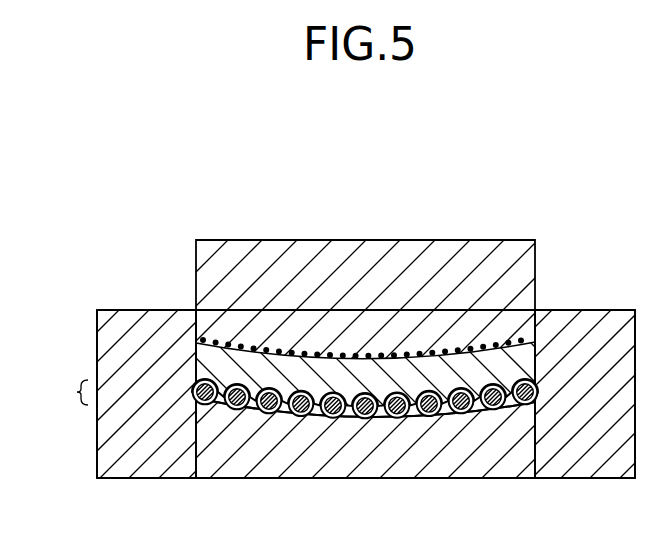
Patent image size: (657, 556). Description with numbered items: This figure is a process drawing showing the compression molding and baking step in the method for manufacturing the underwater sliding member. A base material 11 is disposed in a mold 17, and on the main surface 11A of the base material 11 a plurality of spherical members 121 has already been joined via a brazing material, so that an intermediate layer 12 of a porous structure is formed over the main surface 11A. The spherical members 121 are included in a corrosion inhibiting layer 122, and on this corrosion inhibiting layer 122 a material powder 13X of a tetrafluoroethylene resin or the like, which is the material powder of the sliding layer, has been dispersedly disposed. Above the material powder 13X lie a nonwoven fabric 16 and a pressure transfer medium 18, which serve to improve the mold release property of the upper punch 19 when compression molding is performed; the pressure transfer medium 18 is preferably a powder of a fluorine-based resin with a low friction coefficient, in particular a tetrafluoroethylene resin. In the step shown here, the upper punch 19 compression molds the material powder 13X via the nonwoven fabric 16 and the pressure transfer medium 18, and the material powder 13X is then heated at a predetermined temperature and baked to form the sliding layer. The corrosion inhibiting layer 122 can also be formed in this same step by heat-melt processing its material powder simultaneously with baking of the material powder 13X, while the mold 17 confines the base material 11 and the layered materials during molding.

The base material 11 is at (220, 441).
The main surface 11A is at (487, 410).
The intermediate layer 12 is at (66, 393).
The material powder 13X is at (498, 370).
The nonwoven fabric 16 is at (447, 353).
The mold 17 is at (145, 335).
The pressure transfer medium 18 is at (412, 335).
The upper punch 19 is at (210, 278).
The spherical members 121 is at (268, 392).
The corrosion inhibiting layer 122 is at (360, 396).